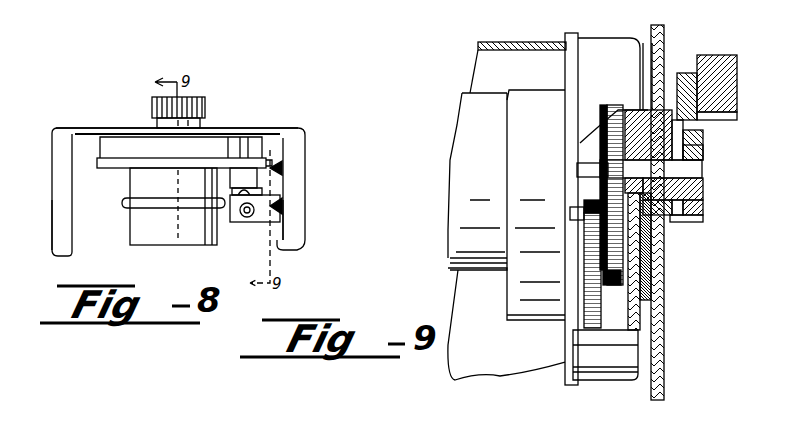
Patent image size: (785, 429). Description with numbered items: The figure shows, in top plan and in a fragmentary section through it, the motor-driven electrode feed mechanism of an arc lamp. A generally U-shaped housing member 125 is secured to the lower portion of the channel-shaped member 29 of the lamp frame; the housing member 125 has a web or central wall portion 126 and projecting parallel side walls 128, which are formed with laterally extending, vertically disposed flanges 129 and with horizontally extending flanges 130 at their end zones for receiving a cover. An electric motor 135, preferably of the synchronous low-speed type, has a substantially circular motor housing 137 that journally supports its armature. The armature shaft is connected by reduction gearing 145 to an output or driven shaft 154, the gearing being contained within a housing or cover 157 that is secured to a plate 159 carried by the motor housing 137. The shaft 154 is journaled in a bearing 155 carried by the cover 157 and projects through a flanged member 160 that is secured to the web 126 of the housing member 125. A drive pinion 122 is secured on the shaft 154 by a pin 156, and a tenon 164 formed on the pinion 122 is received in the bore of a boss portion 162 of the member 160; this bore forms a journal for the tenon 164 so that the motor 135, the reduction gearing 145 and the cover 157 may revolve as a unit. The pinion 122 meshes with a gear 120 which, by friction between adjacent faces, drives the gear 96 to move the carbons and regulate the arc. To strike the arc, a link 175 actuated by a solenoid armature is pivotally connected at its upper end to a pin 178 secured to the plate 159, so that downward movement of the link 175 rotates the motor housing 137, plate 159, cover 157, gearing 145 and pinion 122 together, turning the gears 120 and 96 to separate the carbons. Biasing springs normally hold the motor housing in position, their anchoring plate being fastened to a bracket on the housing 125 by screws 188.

In FIG. 9, the channel-shaped member 29 is at (666, 352).
In FIG. 9, the gear 96 is at (737, 72).
In FIG. 9, the gear 120 is at (680, 73).
In FIG. 8, the drive pinion 122 is at (200, 110).
In FIG. 9, the drive pinion 122 is at (703, 220).
In FIG. 8, the housing member 125 is at (241, 123).
In FIG. 9, the housing member 125 is at (529, 37).
In FIG. 8, the web or central wall portion 126 is at (122, 126).
In FIG. 9, the web or central wall portion 126 is at (652, 325).
In FIG. 8, the side walls 128 is at (52, 152).
In FIG. 8, the vertically disposed flanges 129 is at (70, 254).
In FIG. 8, the horizontally extending flanges 130 is at (70, 208).
In FIG. 8, the electric motor 135 is at (173, 206).
In FIG. 9, the electric motor 135 is at (484, 86).
In FIG. 8, the motor housing 137 is at (203, 247).
In FIG. 9, the motor housing 137 is at (450, 260).
In FIG. 9, the reduction gearing 145 is at (655, 278).
In FIG. 9, the output or driven shaft 154 is at (702, 170).
In FIG. 9, the bearing 155 is at (698, 140).
In FIG. 9, the pin 156 is at (698, 150).
In FIG. 9, the housing or cover 157 is at (588, 38).
In FIG. 8, the plate 159 is at (118, 168).
In FIG. 9, the plate 159 is at (584, 82).
In FIG. 9, the flanged member 160 is at (652, 256).
In FIG. 9, the boss portion 162 is at (665, 212).
In FIG. 9, the tenon or extension 164 is at (702, 203).
In FIG. 8, the link 175 is at (250, 200).
In FIG. 8, the pin 178 is at (271, 168).
In FIG. 8, the screws 188 is at (273, 212).